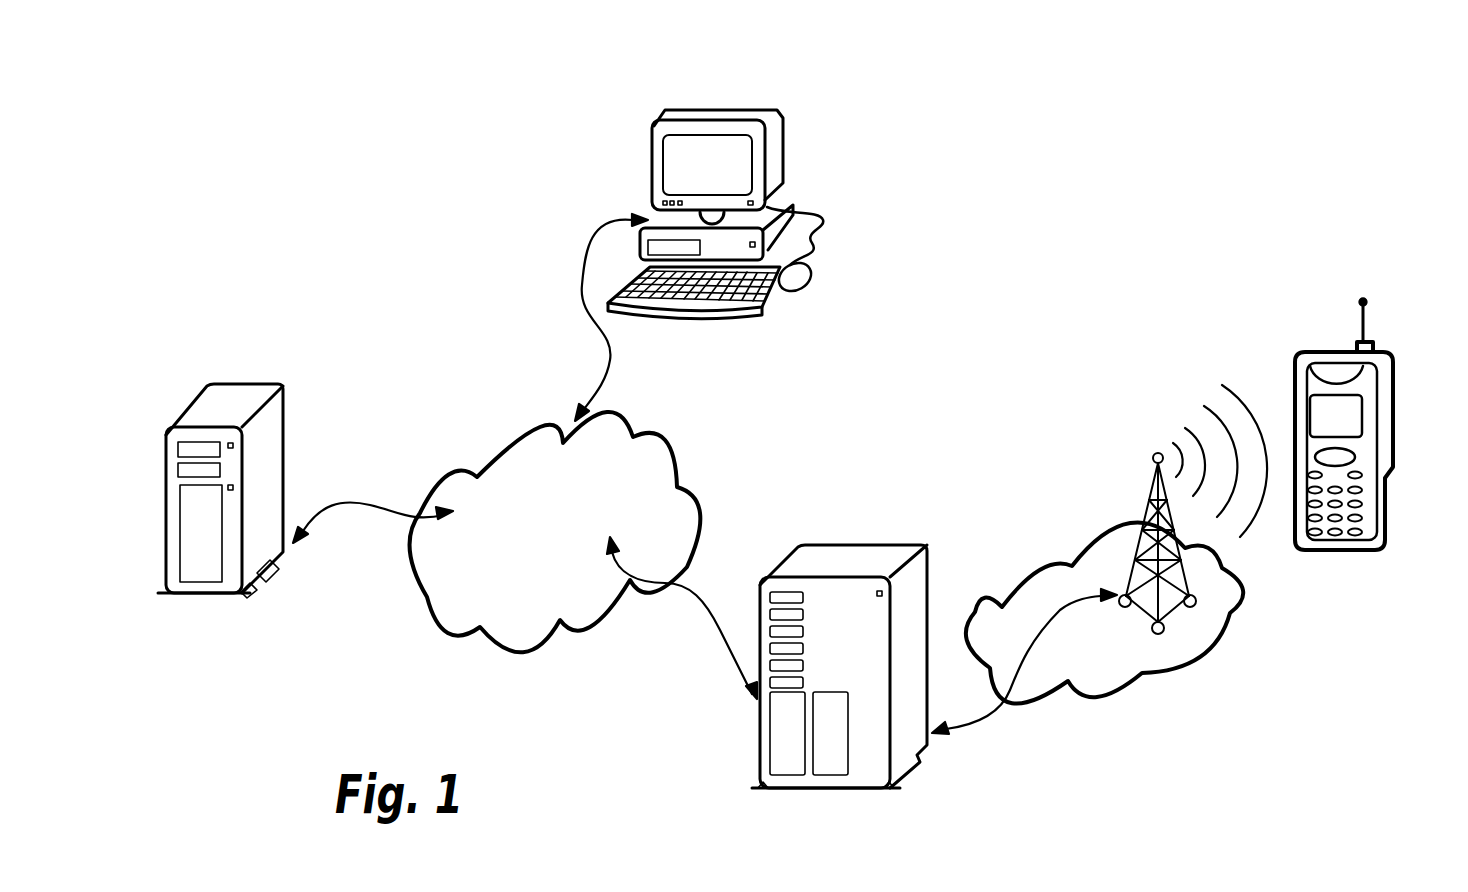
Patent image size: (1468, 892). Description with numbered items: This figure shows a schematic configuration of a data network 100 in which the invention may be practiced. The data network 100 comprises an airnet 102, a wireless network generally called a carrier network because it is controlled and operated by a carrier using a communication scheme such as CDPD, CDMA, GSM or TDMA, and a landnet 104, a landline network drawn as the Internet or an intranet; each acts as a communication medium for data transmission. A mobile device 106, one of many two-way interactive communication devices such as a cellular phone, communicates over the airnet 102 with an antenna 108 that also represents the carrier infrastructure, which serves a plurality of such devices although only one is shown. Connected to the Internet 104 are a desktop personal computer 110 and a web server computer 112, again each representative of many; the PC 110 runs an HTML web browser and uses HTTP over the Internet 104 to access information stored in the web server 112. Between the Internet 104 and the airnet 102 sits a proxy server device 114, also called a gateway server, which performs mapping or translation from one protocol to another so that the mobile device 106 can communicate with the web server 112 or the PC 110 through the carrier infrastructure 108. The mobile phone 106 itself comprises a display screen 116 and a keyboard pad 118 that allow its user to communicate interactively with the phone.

The data network 100 is at (500, 195).
The airnet 102 is at (1012, 597).
The landnet 104 is at (498, 440).
The mobile device 106 is at (1302, 378).
The antenna 108 is at (1143, 540).
The desktop personal computer 110 is at (670, 113).
The web server computer 112 is at (228, 584).
The proxy server device 114 is at (853, 557).
The display screen 116 is at (1363, 422).
The keyboard pad 118 is at (1362, 514).